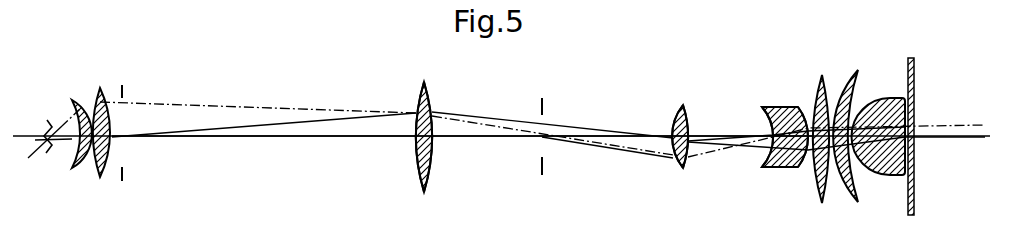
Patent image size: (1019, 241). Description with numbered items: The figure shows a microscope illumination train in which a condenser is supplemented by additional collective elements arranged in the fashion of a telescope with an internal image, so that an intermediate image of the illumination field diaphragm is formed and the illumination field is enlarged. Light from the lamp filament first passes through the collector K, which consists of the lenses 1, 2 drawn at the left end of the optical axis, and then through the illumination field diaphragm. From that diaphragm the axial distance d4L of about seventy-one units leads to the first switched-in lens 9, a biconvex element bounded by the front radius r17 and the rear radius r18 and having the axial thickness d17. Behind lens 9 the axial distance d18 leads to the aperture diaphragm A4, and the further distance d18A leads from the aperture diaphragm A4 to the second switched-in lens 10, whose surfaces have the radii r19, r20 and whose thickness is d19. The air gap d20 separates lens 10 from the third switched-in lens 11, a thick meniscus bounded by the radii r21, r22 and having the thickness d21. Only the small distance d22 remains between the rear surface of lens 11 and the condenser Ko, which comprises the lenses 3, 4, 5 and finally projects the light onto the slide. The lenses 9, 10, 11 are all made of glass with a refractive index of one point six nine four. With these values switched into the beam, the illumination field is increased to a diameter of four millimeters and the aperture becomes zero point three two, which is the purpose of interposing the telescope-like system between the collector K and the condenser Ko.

The lens 1 is at (71, 84).
The lens 2 is at (103, 88).
The collector K is at (83, 88).
The lens 9 is at (425, 130).
The lens 10 is at (681, 133).
The lens 11 is at (777, 143).
The lens 3 is at (814, 101).
The lens 4 is at (850, 101).
The lens 5 is at (880, 87).
The condenser Ko is at (854, 101).
The radius r17 is at (418, 96).
The radius r18 is at (429, 99).
The radius r19 is at (676, 108).
The radius r20 is at (688, 128).
The radius r21 is at (768, 133).
The radius r22 is at (808, 150).
The axial distance d17 is at (418, 140).
The axial distance d18 is at (482, 137).
The axial distance d18A is at (622, 137).
The axial distance d19 is at (680, 143).
The axial distance d20 is at (722, 137).
The axial distance d21 is at (786, 168).
The axial distance d22 is at (811, 152).
The axial distance d4L is at (285, 136).
The aperture diaphragm A4 is at (537, 165).